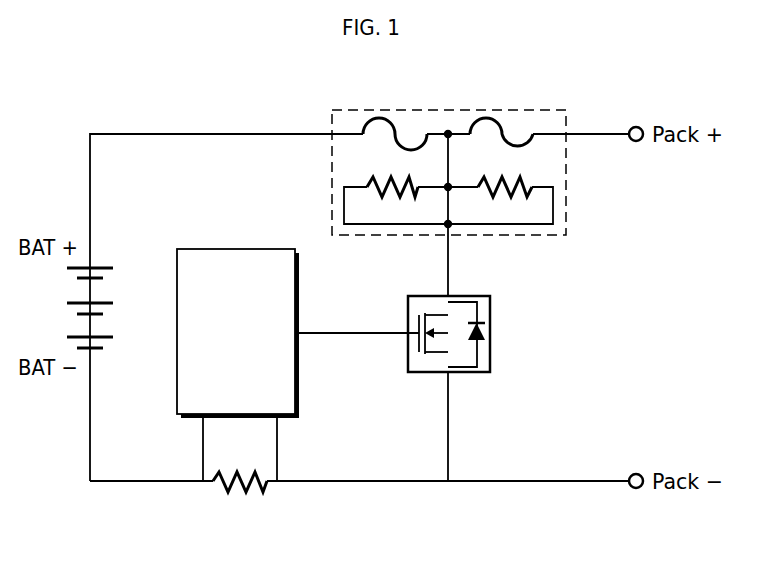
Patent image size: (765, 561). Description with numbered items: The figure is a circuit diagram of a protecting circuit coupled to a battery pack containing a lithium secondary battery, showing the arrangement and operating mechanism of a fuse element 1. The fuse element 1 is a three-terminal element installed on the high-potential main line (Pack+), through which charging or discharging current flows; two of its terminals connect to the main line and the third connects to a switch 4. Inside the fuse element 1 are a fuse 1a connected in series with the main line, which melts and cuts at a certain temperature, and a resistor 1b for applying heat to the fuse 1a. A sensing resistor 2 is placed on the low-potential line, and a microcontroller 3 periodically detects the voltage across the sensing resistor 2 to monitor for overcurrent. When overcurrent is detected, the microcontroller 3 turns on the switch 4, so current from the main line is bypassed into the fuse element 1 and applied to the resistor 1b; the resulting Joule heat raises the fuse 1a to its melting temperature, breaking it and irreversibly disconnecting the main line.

The fuse element 1 is at (532, 110).
The fuse 1a is at (379, 118).
The resistor 1b is at (390, 195).
The sensing resistor 2 is at (236, 491).
The microcontroller 3 is at (234, 249).
The switch 4 is at (491, 333).